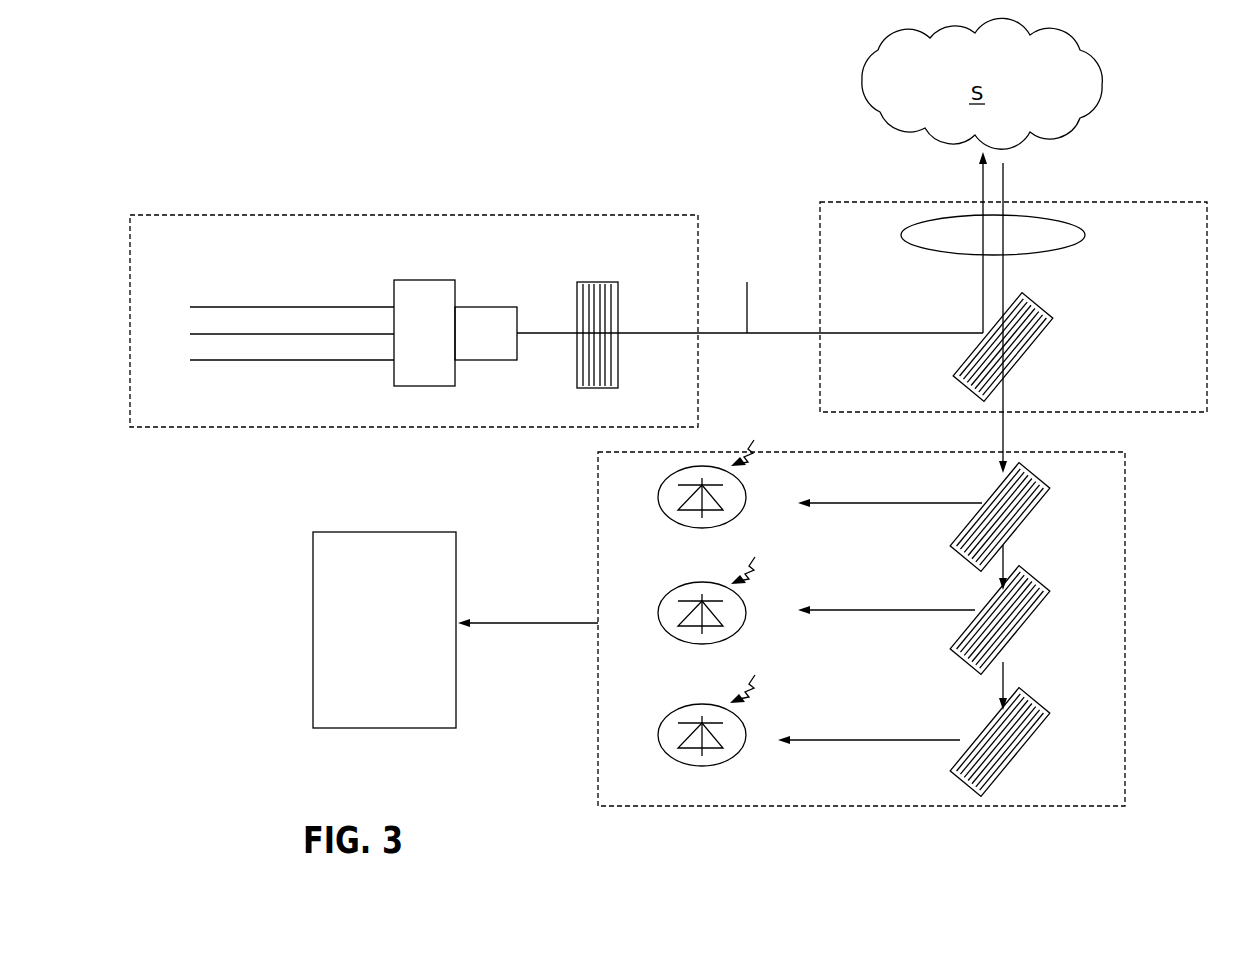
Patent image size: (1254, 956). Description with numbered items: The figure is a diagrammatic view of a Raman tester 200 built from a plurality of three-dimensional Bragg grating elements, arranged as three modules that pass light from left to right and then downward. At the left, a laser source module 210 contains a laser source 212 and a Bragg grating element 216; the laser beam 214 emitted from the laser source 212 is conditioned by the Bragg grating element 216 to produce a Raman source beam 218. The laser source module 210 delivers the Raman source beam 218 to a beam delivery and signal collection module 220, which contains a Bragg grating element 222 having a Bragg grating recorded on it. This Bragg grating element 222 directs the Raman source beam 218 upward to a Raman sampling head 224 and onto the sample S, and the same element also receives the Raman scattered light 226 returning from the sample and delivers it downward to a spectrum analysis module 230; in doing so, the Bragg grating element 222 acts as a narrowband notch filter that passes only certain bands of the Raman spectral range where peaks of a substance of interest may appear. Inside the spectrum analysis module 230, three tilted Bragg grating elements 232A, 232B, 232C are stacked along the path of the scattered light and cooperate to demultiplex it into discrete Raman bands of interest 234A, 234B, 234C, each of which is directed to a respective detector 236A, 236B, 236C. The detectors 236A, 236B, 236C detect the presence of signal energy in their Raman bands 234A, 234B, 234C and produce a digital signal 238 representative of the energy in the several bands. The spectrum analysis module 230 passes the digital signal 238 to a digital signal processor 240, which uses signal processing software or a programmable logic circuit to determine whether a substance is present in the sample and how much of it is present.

The Raman tester 200 is at (537, 112).
The laser source module 210 is at (165, 258).
The laser source 212 is at (413, 302).
The laser beam 214 is at (543, 333).
The Bragg grating element 216 is at (575, 328).
The Raman source beam 218 is at (753, 289).
The beam delivery and signal collection module 220 is at (1172, 244).
The Bragg grating element 222 is at (1030, 343).
The Raman sampling head 224 is at (937, 218).
The Raman scattered light 226 is at (1003, 193).
The spectrum analysis module 230 is at (1052, 794).
The Bragg grating element 232A is at (1030, 507).
The Bragg grating element 232B is at (1043, 607).
The Bragg grating element 232C is at (1033, 718).
The Raman band of interest 234A is at (883, 503).
The Raman band of interest 234B is at (883, 610).
The Raman band of interest 234C is at (855, 745).
The detector 236A is at (662, 507).
The detector 236B is at (662, 635).
The detector 236C is at (658, 733).
The digital signal 238 is at (502, 623).
The digital signal processor 240 is at (376, 644).